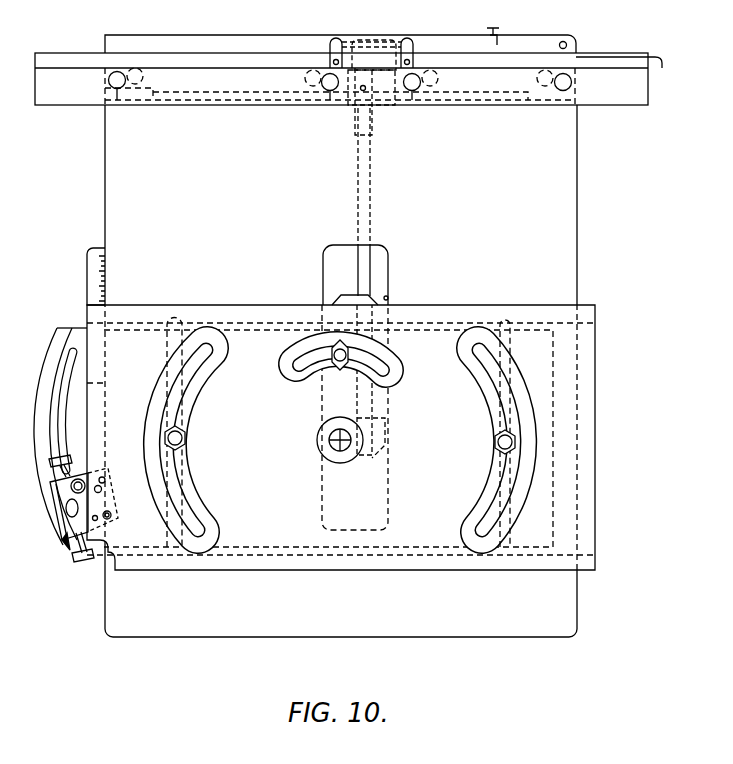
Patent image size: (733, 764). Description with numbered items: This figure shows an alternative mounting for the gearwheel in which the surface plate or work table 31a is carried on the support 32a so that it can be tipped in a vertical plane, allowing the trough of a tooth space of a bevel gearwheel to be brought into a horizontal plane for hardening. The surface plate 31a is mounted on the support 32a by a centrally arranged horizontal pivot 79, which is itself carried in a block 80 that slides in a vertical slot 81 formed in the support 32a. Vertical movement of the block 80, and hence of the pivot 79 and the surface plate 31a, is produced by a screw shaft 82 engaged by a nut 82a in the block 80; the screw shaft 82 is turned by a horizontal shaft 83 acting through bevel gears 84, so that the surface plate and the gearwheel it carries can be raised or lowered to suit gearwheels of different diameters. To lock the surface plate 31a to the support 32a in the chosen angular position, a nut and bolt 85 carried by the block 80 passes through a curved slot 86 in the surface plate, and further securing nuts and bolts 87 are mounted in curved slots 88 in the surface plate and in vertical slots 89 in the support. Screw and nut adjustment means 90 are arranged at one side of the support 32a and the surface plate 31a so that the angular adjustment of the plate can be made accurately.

The surface plate 31a is at (478, 313).
The support 32a is at (573, 241).
The horizontal pivot 79 is at (331, 446).
The block 80 is at (385, 426).
The vertical slot 81 is at (388, 297).
The screw shaft 82 is at (372, 275).
The nut 82a is at (385, 335).
The horizontal shaft 83 is at (437, 53).
The bevel gears 84 is at (366, 72).
The nut and bolt 85 is at (336, 363).
The curved slot 86 is at (292, 362).
The securing nuts and bolts 87 is at (184, 438).
The curved slots 88 is at (186, 388).
The vertical slots 89 is at (168, 340).
The screw and nut adjustment means 90 is at (67, 548).